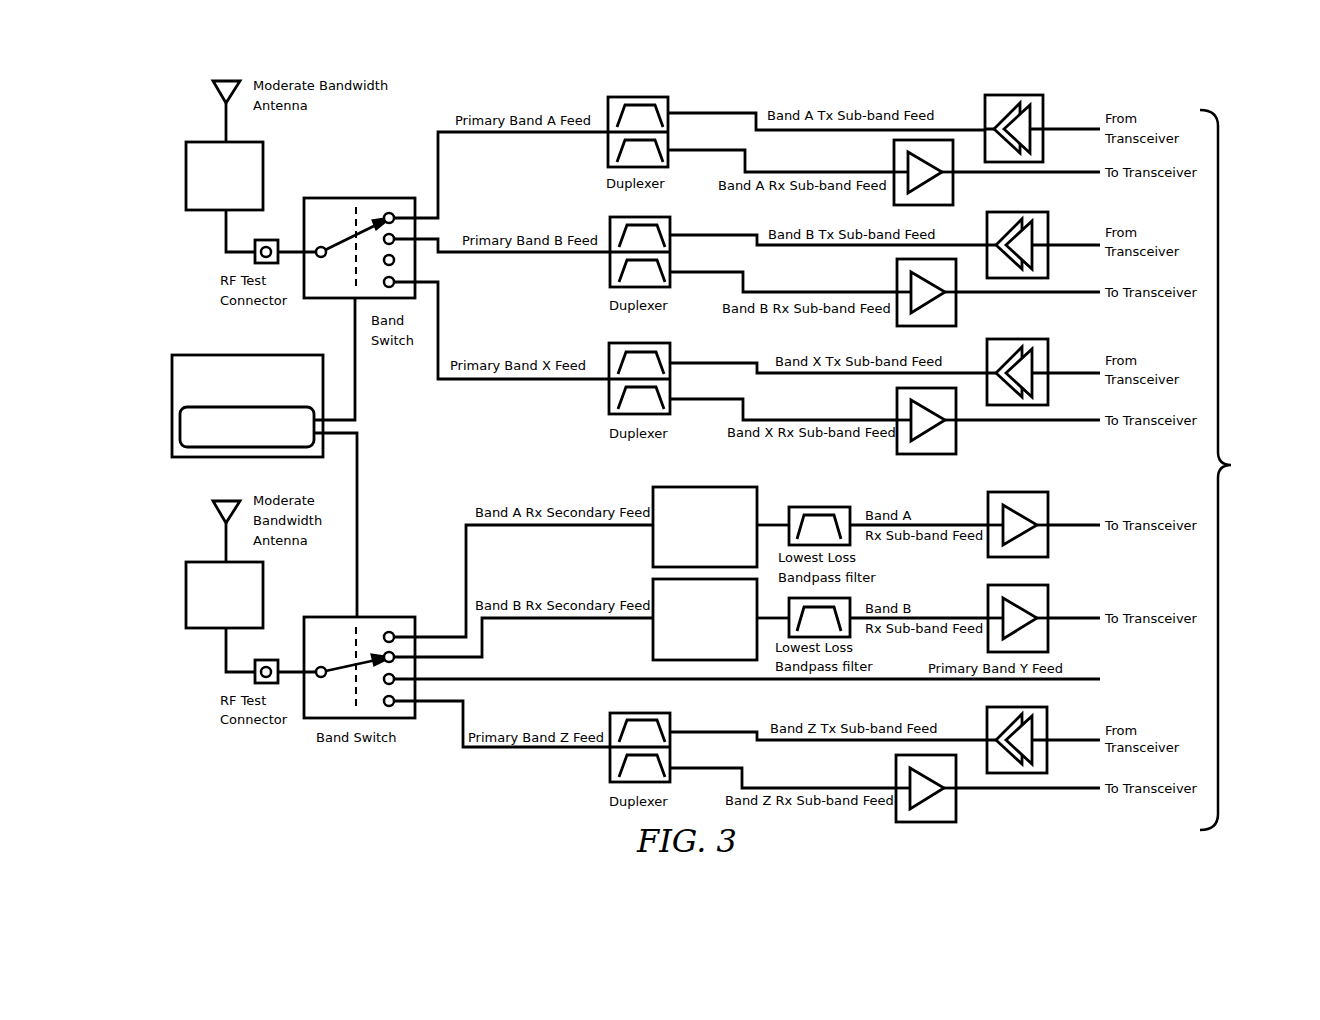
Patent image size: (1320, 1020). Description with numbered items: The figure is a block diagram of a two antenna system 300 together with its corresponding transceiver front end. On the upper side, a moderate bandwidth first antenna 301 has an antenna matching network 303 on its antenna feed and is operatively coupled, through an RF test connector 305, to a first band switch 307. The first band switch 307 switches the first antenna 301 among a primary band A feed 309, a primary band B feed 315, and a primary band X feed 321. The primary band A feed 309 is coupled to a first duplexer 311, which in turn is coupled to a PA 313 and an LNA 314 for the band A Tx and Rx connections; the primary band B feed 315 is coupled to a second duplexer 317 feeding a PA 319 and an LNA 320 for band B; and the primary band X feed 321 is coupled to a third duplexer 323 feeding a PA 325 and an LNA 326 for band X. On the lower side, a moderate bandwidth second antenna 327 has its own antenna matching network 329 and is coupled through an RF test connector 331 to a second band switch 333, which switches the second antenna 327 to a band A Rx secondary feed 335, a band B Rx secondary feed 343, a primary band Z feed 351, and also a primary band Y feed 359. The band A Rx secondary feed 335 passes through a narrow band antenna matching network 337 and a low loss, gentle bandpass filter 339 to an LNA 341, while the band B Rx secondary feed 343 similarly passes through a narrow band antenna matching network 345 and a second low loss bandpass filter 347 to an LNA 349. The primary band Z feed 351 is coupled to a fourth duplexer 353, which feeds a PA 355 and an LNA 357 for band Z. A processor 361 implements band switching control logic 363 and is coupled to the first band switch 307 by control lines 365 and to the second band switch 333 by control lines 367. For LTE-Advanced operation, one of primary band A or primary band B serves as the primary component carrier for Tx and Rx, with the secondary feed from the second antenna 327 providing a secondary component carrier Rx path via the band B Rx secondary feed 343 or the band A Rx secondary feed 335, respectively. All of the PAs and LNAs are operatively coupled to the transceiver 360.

The two antenna system 300 is at (1170, 88).
The moderate bandwidth first antenna 301 is at (215, 92).
The antenna matching network 303 is at (265, 157).
The RF test connector 305 is at (268, 237).
The first band switch 307 is at (367, 197).
The primary band A feed 309 is at (441, 178).
The first duplexer 311 is at (657, 95).
The PA 313 is at (1045, 107).
The LNA 314 is at (893, 158).
The primary band B feed 315 is at (438, 235).
The second duplexer 317 is at (673, 223).
The PA 319 is at (1050, 225).
The LNA 320 is at (895, 273).
The primary band X feed 321 is at (441, 307).
The third duplexer 323 is at (674, 352).
The PA 325 is at (1050, 353).
The LNA 326 is at (895, 401).
The moderate bandwidth second antenna 327 is at (215, 511).
The antenna matching network 329 is at (265, 577).
The RF test connector 331 is at (270, 657).
The second band switch 333 is at (367, 615).
The band A Rx secondary feed 335 is at (469, 565).
The narrow band antenna matching network 337 is at (651, 500).
The low loss bandpass filter 339 is at (853, 510).
The LNA 341 is at (1050, 506).
The band B Rx secondary feed 343 is at (485, 645).
The narrow band antenna matching network 345 is at (651, 593).
The low loss bandpass filter 347 is at (853, 603).
The LNA 349 is at (1050, 600).
The primary band Z feed 351 is at (466, 717).
The fourth duplexer 353 is at (672, 722).
The PA 355 is at (1050, 720).
The LNA 357 is at (895, 768).
The primary band Y feed 359 is at (594, 678).
The transceiver 360 is at (1232, 470).
The processor 361 is at (220, 353).
The band switching control logic 363 is at (252, 404).
The control lines 365 is at (358, 392).
The control lines 367 is at (360, 490).